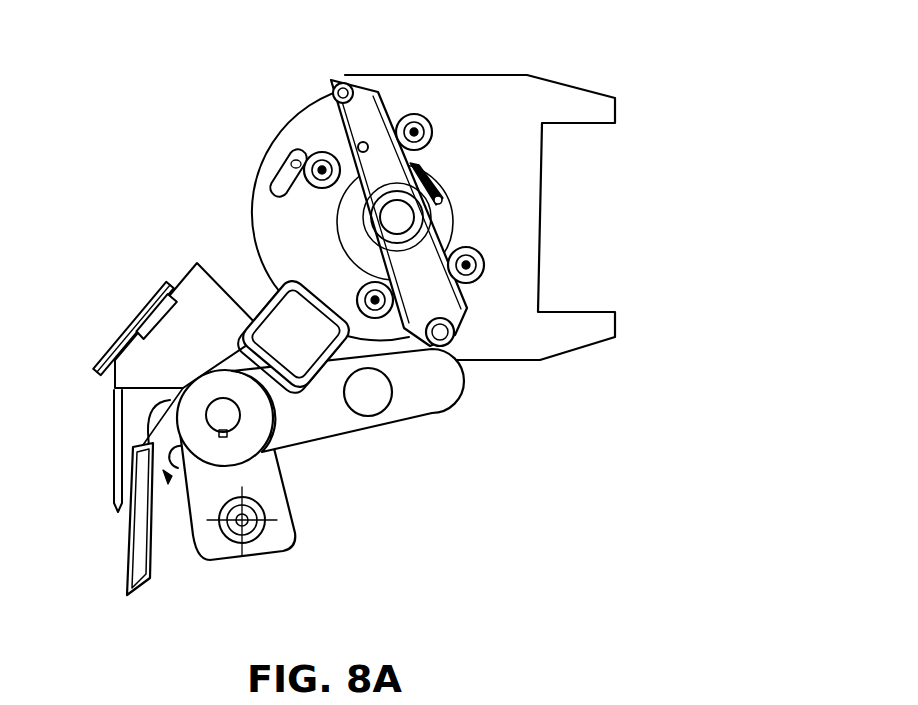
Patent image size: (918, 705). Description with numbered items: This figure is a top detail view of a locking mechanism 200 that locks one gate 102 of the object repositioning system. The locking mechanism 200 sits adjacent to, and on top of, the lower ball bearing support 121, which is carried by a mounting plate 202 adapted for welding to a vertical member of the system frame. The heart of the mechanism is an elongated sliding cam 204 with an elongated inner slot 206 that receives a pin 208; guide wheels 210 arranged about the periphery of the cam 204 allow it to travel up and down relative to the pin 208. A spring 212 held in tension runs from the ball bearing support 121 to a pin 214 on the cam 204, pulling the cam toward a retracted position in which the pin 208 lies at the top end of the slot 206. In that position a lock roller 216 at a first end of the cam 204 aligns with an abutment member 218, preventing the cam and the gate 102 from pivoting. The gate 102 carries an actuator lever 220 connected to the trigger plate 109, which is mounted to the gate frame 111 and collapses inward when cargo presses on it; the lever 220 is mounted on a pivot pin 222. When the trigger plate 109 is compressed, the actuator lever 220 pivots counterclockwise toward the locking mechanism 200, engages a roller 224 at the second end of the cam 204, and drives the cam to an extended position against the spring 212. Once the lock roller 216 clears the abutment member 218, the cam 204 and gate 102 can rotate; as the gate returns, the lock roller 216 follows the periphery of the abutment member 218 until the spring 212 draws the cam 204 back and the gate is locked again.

The gate 102 is at (59, 552).
The trigger plate 109 is at (118, 335).
The frame 111 is at (160, 545).
The lower ball bearing support 121 is at (335, 206).
The locking mechanism 200 is at (567, 437).
The mounting plate 202 is at (526, 238).
The sliding cam 204 is at (363, 112).
The inner slot 206 is at (438, 240).
The pin 208 is at (385, 220).
The guide wheels 210 is at (310, 158).
The spring 212 is at (425, 166).
The pin 214 is at (362, 142).
The lock roller 216 is at (337, 77).
The abutment member 218 is at (284, 160).
The actuator lever 220 is at (333, 423).
The pivot pin 222 is at (232, 418).
The roller 224 is at (443, 333).